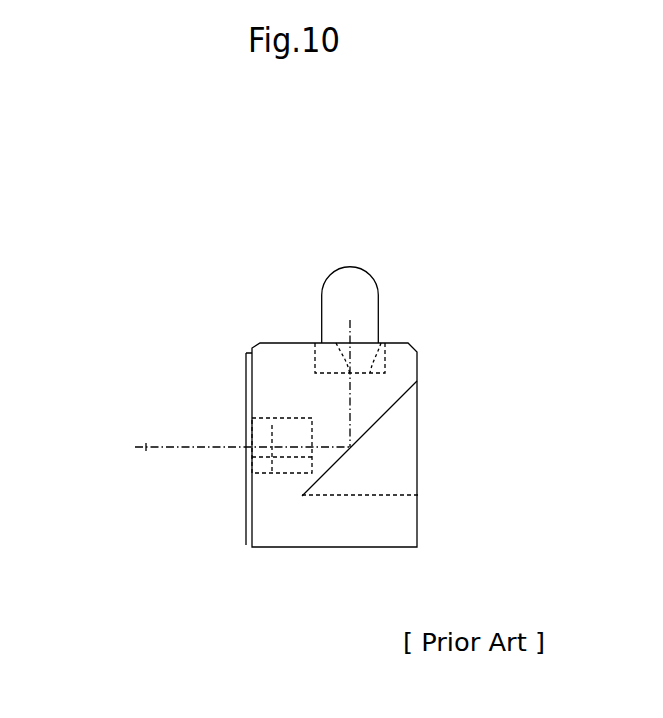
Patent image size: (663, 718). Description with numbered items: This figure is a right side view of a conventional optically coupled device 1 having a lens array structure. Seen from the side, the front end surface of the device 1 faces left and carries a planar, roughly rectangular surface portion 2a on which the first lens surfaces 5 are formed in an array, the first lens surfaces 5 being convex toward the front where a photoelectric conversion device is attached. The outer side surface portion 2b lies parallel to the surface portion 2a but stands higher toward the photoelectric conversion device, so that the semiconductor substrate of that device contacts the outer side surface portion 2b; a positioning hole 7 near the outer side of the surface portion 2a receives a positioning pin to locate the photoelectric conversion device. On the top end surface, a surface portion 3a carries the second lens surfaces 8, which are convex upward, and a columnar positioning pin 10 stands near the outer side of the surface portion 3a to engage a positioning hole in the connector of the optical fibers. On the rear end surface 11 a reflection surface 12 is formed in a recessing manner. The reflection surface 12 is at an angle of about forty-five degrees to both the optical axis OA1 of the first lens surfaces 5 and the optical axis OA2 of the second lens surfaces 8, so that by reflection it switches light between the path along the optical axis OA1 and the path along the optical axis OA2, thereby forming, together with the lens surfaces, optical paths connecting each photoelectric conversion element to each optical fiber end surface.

The optically coupled device 1 is at (181, 236).
The positioning pin 10 is at (350, 266).
The rear end surface 11 is at (418, 363).
The reflection surface 12 is at (358, 441).
The surface portion 2a is at (272, 425).
The outer side surface portion 2b is at (247, 510).
The surface portion 3a is at (381, 343).
The first lens surface 5 is at (252, 438).
The positioning hole 7 is at (252, 457).
The second lens surface 8 is at (320, 338).
The optical axis of the first lens surfaces OA1 is at (146, 447).
The optical axis of the second lens surfaces OA2 is at (348, 333).